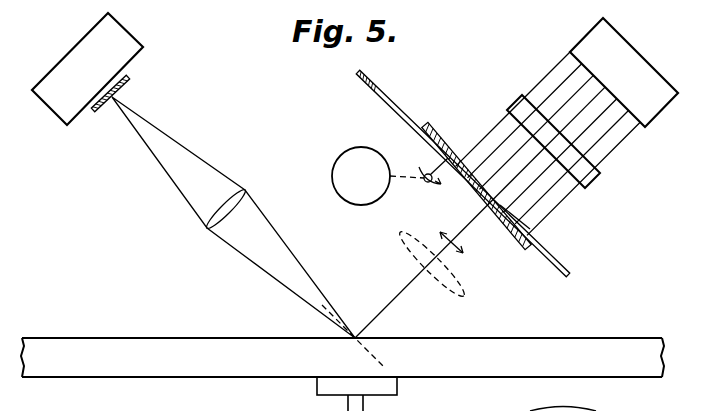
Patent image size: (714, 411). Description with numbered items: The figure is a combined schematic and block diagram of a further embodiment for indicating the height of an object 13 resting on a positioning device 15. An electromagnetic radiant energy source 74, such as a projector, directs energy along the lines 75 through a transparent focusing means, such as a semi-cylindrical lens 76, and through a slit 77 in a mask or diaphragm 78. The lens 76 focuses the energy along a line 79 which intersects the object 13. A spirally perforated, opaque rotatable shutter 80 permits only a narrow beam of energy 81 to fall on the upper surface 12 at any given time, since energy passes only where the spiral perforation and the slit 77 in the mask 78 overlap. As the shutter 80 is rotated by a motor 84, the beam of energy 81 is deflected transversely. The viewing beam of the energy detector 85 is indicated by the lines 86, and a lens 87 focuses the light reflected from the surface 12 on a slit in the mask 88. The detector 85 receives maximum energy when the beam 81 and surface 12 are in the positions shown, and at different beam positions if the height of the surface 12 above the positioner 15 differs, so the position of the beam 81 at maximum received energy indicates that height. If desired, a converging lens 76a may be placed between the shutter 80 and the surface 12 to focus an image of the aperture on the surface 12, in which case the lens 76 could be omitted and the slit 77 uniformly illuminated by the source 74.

The upper surface 12 is at (275, 338).
The object 13 is at (484, 340).
The positioning device 15 is at (332, 390).
The electromagnetic radiant energy source 74 is at (655, 113).
The lines 75 is at (566, 79).
The lens 76 is at (600, 180).
The converging lens 76a is at (414, 259).
The slit 77 is at (530, 229).
The mask 78 is at (569, 272).
The line 79 is at (372, 357).
The rotatable shutter 80 is at (528, 244).
The beam of energy 81 is at (396, 299).
The motor 84 is at (359, 205).
The energy detector 85 is at (143, 48).
The lines 86 is at (280, 236).
The lens 87 is at (234, 195).
The mask 88 is at (128, 78).